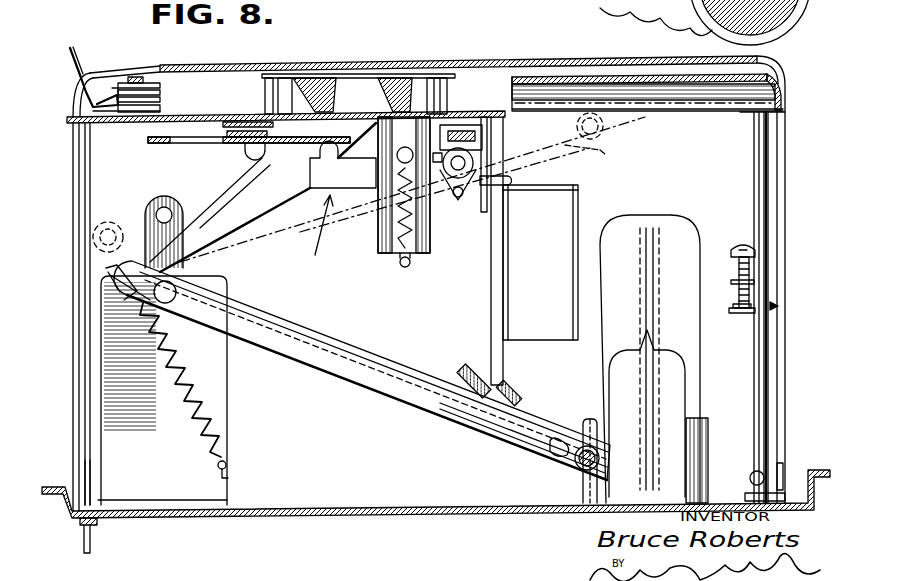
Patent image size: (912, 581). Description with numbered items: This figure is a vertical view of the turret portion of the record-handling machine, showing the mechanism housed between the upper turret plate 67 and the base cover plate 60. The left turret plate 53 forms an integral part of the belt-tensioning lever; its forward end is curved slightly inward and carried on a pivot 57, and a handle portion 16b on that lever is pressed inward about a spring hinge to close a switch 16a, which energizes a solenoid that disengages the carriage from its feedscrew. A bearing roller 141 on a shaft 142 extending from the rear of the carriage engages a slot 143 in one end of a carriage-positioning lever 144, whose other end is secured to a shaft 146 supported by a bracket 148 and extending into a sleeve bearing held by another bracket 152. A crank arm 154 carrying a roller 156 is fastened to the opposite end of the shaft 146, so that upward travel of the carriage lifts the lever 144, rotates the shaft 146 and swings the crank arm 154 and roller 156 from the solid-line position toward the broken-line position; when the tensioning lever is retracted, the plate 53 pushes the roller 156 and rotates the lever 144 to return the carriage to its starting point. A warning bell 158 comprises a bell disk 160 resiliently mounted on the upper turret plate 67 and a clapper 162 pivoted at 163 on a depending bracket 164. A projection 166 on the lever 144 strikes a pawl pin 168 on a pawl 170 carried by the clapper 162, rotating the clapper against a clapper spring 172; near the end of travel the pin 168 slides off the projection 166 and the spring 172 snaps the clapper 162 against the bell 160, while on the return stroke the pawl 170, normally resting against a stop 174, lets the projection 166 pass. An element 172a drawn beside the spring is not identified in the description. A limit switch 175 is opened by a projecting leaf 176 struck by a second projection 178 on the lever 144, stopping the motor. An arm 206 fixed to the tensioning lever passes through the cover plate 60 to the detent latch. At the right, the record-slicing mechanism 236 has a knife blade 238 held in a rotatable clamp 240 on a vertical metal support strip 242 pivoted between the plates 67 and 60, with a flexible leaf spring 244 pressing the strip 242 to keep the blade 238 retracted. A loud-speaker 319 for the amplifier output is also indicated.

The switch 16a is at (160, 92).
The handle portion 16b is at (76, 68).
The left turret plate 53 is at (80, 284).
The pivot 57 is at (96, 511).
The cover plate 60 is at (325, 518).
The upper turret plate 67 is at (205, 116).
The bearing roller 141 is at (604, 152).
The shaft 142 is at (602, 466).
The slot 143 is at (620, 128).
The carriage-positioning lever 144 is at (363, 410).
The shaft 146 is at (167, 303).
The bracket 148 is at (220, 392).
The bracket 152 is at (230, 196).
The crank arm 154 is at (187, 232).
The roller 156 is at (126, 212).
The warning bell 158 is at (331, 287).
The bell disk 160 is at (160, 138).
The clapper 162 is at (318, 172).
The pivot 163 is at (400, 150).
The depending bracket 164 is at (322, 205).
The projection 166 is at (512, 393).
The pawl pin 168 is at (512, 186).
The pawl 170 is at (499, 190).
The clapper spring 172 is at (400, 264).
The bracket 172a is at (462, 201).
The stop 174 is at (438, 158).
The limit switch 175 is at (474, 125).
The projecting leaf 176 is at (480, 141).
The projection 178 is at (480, 370).
The arm 206 is at (90, 535).
The record slicing mechanism 236 is at (729, 258).
The knife blade 238 is at (728, 307).
The rotatable clamp 240 is at (740, 314).
The vertical metal support strip 242 is at (765, 190).
The flexible leaf spring 244 is at (785, 470).
The loud-speaker 319 is at (390, 76).